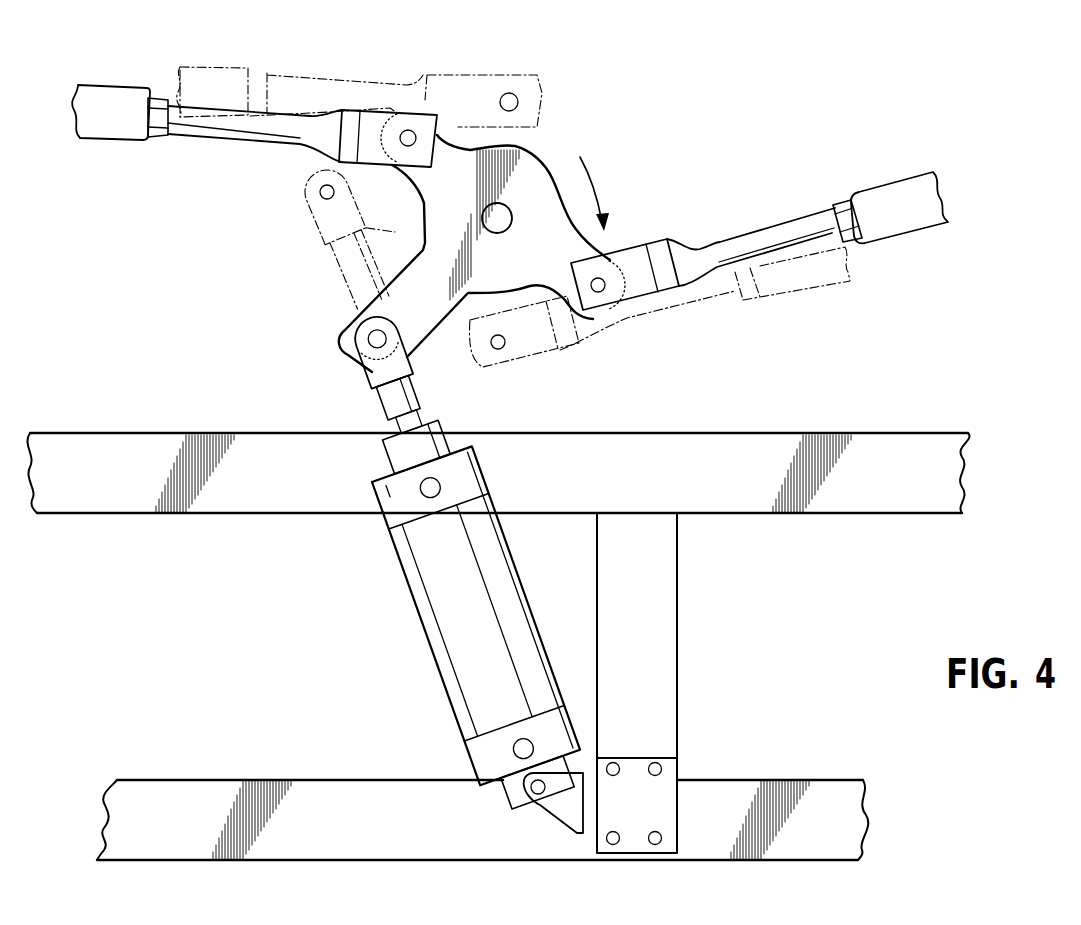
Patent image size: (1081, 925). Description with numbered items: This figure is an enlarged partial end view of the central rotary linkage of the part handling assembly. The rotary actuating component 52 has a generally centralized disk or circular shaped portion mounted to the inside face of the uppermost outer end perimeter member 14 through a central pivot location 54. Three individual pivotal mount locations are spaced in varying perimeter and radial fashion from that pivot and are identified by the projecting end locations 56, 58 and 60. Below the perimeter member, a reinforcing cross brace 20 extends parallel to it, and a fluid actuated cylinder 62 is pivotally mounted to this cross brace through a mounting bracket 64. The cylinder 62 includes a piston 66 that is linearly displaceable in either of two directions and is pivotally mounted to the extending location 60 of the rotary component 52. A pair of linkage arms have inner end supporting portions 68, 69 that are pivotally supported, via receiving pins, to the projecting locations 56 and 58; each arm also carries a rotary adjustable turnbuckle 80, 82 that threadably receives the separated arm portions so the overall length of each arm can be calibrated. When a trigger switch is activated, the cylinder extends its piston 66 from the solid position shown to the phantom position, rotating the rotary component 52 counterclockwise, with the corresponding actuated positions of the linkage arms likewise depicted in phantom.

The outer end perimeter member 14 is at (868, 447).
The cross brace 20 is at (187, 785).
The rotary actuating component 52 is at (535, 172).
The central pivot location 54 is at (493, 222).
The projecting end location 56 is at (570, 298).
The projecting end location 58 is at (443, 142).
The projecting end location 60 is at (347, 333).
The fluid actuated cylinder 62 is at (447, 637).
The mounting bracket 64 is at (560, 803).
The piston 66 is at (398, 424).
The inner end supporting portion 68 is at (773, 226).
The inner end supporting portion 69 is at (259, 142).
The rotary adjustable turnbuckle 80 is at (883, 204).
The rotary adjustable turnbuckle 82 is at (112, 92).